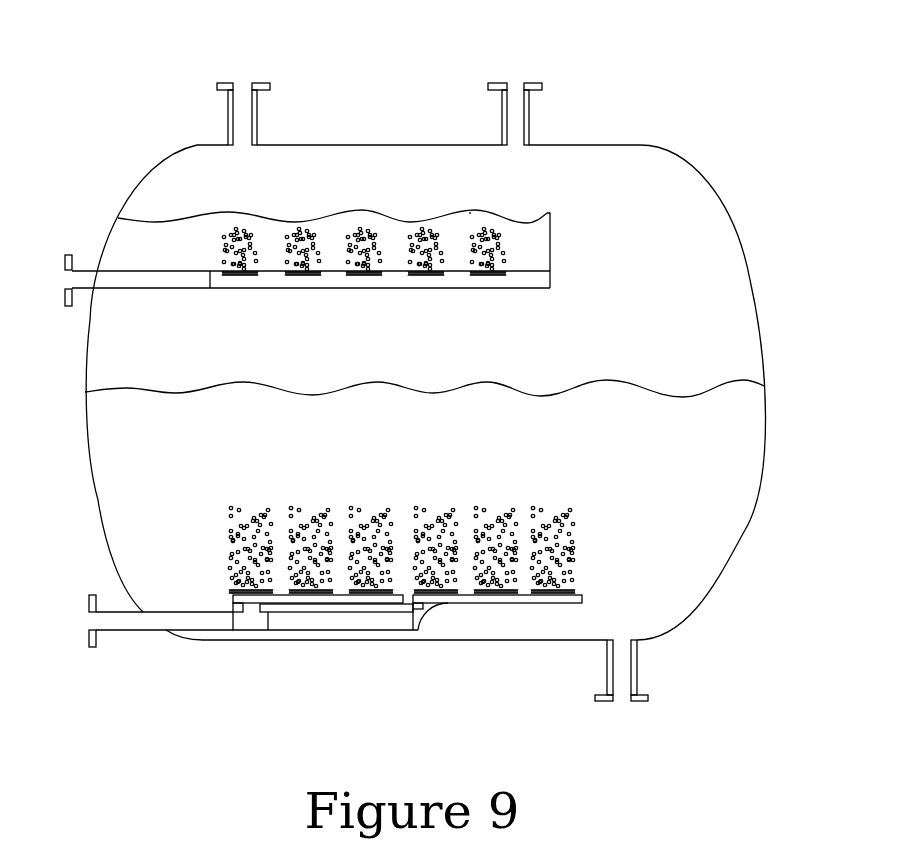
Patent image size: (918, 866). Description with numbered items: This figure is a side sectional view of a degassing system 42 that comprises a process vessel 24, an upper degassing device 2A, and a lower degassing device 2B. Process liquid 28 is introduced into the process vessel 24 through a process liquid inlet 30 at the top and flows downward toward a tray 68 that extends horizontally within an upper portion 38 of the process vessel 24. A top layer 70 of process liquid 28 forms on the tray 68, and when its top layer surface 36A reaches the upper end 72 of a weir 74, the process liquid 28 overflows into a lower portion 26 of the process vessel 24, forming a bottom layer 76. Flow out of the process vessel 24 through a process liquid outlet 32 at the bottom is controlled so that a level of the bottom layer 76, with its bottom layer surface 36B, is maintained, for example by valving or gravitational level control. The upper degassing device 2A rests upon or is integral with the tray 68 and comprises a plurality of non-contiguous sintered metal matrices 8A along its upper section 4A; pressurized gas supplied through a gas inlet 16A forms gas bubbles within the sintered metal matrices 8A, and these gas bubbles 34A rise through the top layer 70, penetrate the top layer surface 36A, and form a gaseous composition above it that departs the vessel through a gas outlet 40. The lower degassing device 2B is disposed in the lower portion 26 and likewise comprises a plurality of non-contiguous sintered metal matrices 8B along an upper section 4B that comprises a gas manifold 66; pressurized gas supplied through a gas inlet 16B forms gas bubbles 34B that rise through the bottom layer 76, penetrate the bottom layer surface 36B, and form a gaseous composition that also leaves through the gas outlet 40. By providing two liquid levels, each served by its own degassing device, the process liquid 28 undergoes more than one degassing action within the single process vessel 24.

The upper degassing device 2A is at (468, 288).
The lower degassing device 2B is at (448, 603).
The upper section 4A is at (210, 271).
The upper section 4B is at (233, 598).
The sintered metal matrices 8A is at (223, 271).
The sintered metal matrices 8B is at (233, 591).
The gas inlet 16A is at (103, 271).
The gas inlet 16B is at (168, 633).
The process vessel 24 is at (760, 305).
The lower portion 26 is at (85, 412).
The process liquid 28 is at (140, 237).
The process liquid inlet 30 is at (231, 143).
The process liquid outlet 32 is at (638, 642).
The gas bubbles 34A is at (315, 228).
The gas bubbles 34B is at (565, 550).
The top layer surface 36A is at (367, 210).
The bottom layer surface 36B is at (117, 386).
The upper portion 38 is at (713, 182).
The gas outlet 40 is at (489, 143).
The degassing system 42 is at (586, 80).
The gas manifold 66 is at (230, 623).
The tray 68 is at (550, 281).
The top layer 70 is at (475, 220).
The upper end 72 is at (550, 211).
The weir 74 is at (550, 248).
The bottom layer 76 is at (738, 433).